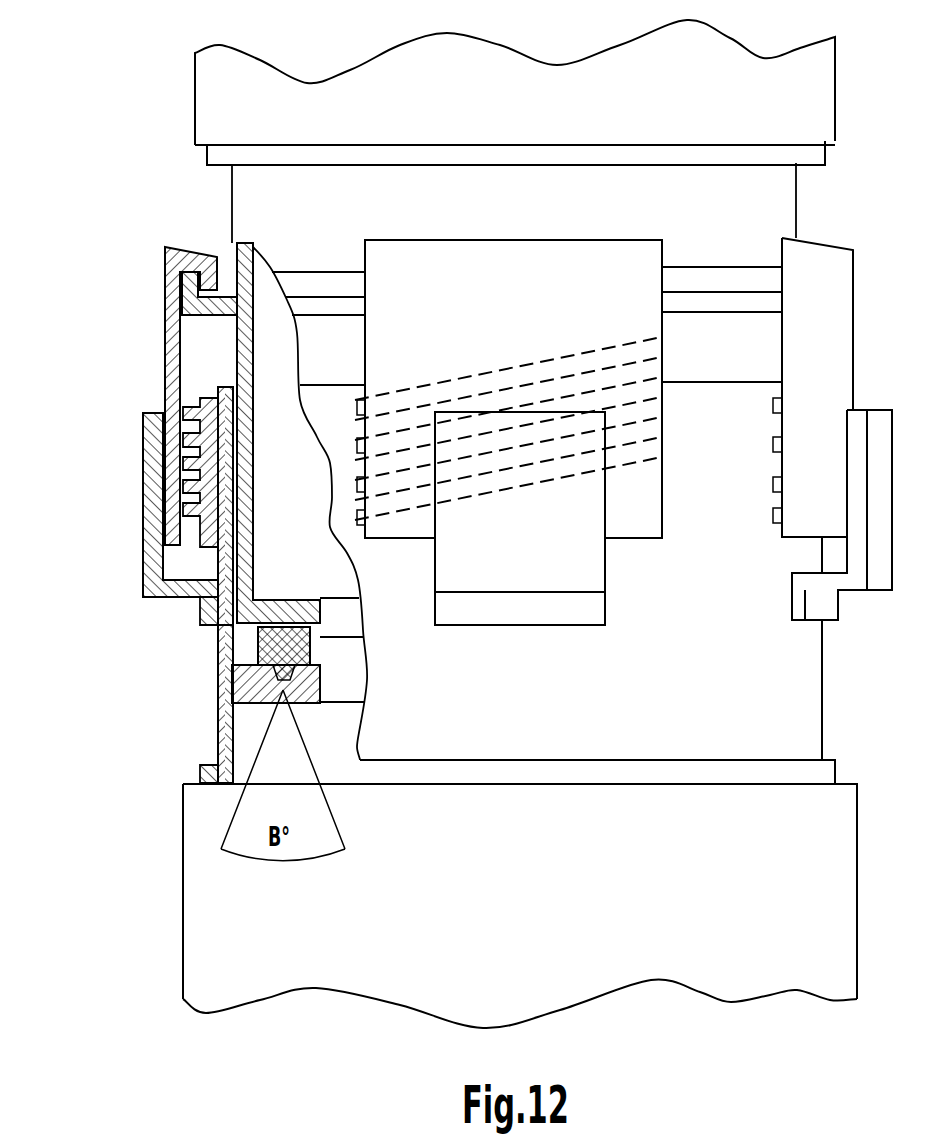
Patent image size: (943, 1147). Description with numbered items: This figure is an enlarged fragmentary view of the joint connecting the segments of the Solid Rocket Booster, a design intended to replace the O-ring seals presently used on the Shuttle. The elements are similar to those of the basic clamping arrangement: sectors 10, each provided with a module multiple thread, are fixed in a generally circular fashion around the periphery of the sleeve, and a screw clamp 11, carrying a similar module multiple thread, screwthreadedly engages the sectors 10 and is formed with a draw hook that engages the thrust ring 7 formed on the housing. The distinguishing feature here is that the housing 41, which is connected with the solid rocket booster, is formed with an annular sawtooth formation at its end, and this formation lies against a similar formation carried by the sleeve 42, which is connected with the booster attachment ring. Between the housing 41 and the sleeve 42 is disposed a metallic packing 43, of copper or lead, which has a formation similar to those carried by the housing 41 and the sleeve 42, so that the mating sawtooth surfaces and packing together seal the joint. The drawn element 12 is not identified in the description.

The thrust ring 7 is at (185, 289).
The sector 10 is at (185, 485).
The screw clamp 11 is at (165, 249).
The outer bracket 12 is at (143, 440).
The housing 41 is at (225, 565).
The sleeve 42 is at (220, 736).
The metallic packing 43 is at (310, 650).